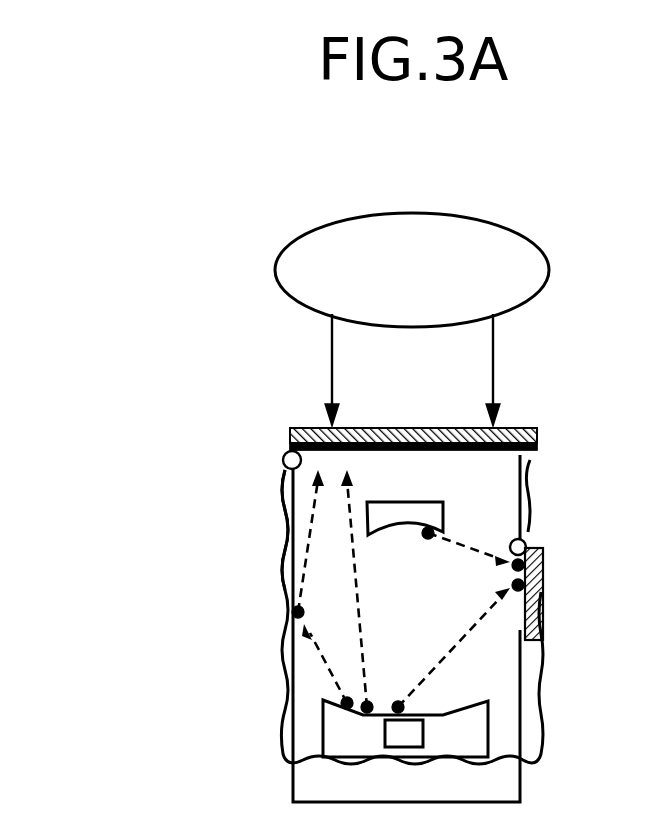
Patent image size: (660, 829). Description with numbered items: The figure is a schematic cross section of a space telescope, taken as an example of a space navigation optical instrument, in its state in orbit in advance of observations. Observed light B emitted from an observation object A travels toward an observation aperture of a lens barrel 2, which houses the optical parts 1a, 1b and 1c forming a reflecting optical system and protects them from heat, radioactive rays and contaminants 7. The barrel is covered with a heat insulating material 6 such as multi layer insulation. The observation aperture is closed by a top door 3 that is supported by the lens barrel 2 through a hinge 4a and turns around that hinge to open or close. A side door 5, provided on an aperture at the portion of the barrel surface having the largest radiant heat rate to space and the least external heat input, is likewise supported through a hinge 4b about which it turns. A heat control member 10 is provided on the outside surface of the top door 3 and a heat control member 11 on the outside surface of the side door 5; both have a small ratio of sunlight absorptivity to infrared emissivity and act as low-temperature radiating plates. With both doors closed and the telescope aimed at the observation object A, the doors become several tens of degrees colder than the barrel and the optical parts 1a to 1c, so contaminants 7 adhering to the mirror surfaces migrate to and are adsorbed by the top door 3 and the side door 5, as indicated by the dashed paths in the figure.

The observation object A is at (410, 213).
The observed light B is at (495, 356).
The optical part 1a is at (488, 732).
The optical part 1b is at (443, 512).
The optical part 1c is at (403, 747).
The lens barrel 2 is at (291, 596).
The top door 3 is at (538, 437).
The hinge 4a is at (282, 452).
The hinge 4b is at (535, 545).
The side door 5 is at (548, 630).
The heat insulating material 6 is at (281, 512).
The contaminants 7 is at (297, 619).
The heat control member 10 is at (437, 428).
The heat control member 11 is at (548, 590).